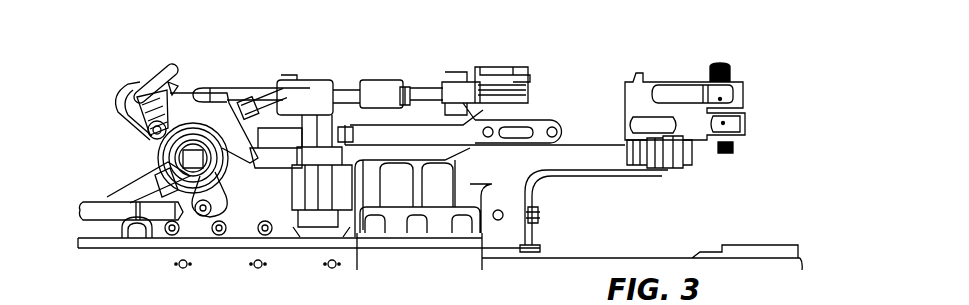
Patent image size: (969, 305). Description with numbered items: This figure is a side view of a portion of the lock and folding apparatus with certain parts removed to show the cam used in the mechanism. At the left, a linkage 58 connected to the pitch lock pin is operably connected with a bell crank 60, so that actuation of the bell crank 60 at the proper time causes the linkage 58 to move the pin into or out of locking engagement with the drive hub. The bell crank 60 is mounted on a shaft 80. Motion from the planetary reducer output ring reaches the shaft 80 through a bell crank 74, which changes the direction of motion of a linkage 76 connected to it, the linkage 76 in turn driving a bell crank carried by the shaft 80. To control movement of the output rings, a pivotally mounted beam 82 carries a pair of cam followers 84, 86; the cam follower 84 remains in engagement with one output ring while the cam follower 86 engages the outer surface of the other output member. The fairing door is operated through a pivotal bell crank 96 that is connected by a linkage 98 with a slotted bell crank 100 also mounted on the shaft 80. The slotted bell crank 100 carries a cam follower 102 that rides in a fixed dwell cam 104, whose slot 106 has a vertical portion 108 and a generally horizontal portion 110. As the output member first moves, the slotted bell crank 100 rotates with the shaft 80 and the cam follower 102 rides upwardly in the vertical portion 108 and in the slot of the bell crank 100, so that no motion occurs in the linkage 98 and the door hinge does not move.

The linkage 58 is at (95, 222).
The bell crank 60 is at (217, 187).
The bell crank 74 is at (517, 73).
The linkage 76 is at (375, 80).
The shaft 80 is at (173, 160).
The pivotally mounted beam 82 is at (682, 75).
The cam follower 84 is at (737, 90).
The cam follower 86 is at (743, 125).
The pivotal bell crank 96 is at (324, 78).
The linkage 98 is at (257, 93).
The slotted bell crank 100 is at (120, 97).
The cam follower 102 is at (150, 125).
The dwell cam 104 is at (150, 83).
The slot 106 is at (177, 80).
The vertical portion 108 is at (150, 110).
The horizontal portion 110 is at (207, 90).